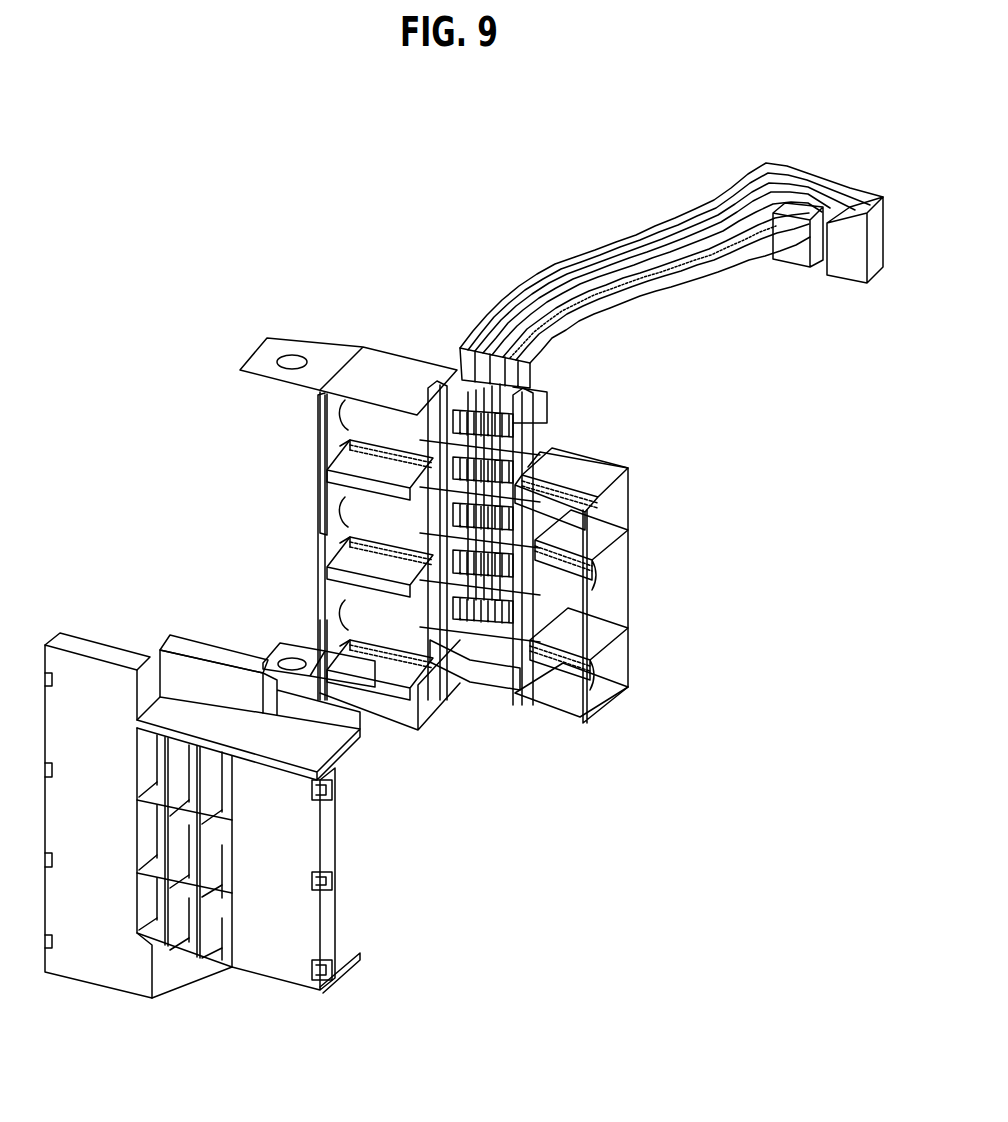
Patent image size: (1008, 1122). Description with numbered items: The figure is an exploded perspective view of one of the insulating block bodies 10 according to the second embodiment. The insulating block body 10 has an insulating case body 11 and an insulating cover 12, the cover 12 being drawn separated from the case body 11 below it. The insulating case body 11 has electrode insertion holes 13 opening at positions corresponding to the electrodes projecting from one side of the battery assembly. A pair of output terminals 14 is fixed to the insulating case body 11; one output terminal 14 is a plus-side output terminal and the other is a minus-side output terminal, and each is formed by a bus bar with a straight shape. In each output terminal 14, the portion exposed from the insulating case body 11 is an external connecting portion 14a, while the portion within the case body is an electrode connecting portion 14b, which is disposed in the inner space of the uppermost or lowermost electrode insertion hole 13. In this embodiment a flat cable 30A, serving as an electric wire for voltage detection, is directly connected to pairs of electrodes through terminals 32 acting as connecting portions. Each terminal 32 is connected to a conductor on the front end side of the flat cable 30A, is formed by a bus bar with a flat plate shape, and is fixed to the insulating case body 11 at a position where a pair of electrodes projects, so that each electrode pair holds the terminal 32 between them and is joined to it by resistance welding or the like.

The insulating block body 10 is at (203, 228).
The insulating case body 11 is at (618, 560).
The insulating cover 12 is at (265, 965).
The electrode insertion hole 13 is at (360, 492).
The output terminal 14 is at (264, 389).
The external connecting portion 14a is at (257, 360).
The electrode connecting portion 14b is at (337, 410).
The flat cable 30A is at (571, 248).
The terminal 32 is at (327, 488).